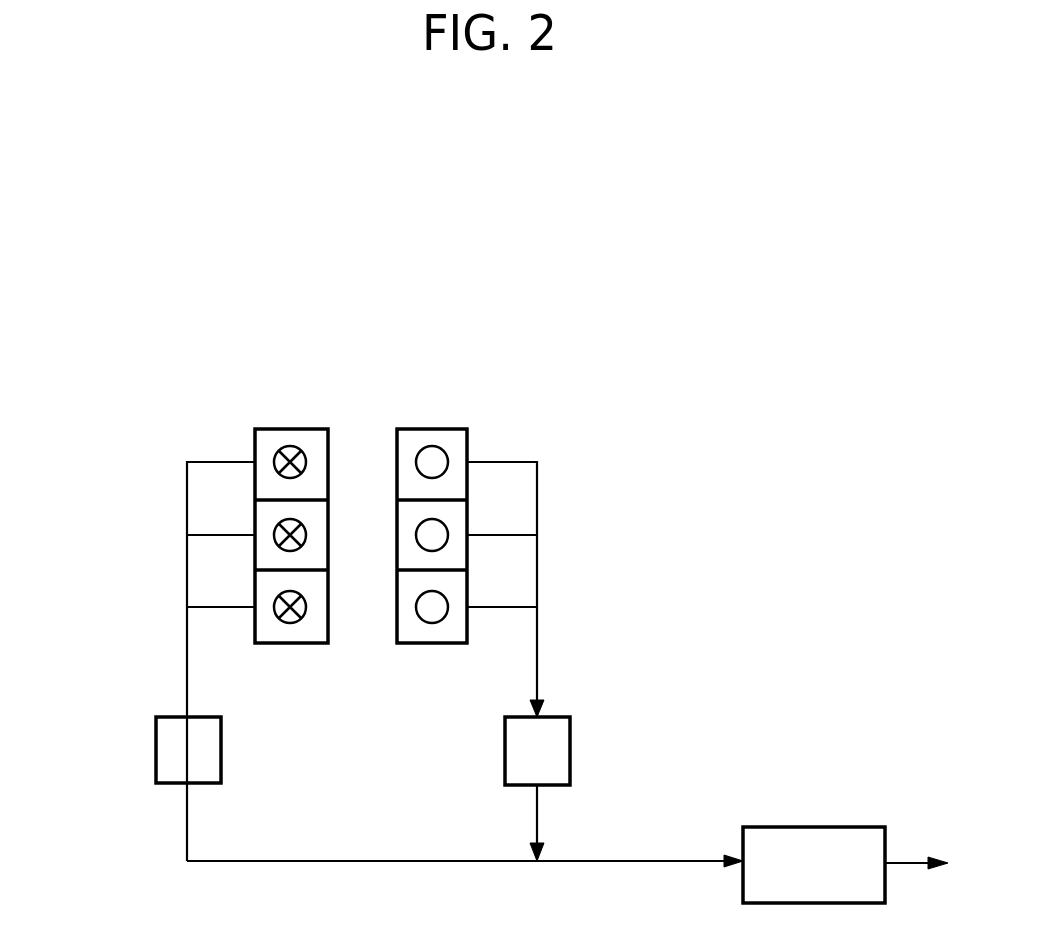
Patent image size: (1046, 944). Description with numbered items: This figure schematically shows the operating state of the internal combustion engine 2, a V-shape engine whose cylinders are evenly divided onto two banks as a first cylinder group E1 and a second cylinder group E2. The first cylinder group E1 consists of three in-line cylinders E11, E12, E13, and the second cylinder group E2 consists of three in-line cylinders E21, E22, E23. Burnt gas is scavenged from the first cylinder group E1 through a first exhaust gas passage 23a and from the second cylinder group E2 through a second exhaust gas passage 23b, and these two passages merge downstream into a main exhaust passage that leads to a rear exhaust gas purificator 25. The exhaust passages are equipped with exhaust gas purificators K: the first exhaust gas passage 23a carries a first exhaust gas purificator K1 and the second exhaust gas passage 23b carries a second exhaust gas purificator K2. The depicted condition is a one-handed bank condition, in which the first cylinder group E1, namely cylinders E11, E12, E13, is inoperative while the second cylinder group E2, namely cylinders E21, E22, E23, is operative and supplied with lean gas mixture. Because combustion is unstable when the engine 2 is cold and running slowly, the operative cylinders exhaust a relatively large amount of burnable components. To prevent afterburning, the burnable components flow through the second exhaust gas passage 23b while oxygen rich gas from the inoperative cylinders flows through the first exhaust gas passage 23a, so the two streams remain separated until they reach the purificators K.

The internal combustion engine 2 is at (510, 243).
The first cylinder group E1 is at (352, 300).
The second cylinder group E2 is at (620, 300).
The cylinder E11 is at (274, 456).
The cylinder E12 is at (304, 529).
The cylinder E13 is at (309, 608).
The cylinder E21 is at (412, 444).
The cylinder E22 is at (455, 525).
The cylinder E23 is at (452, 595).
The first exhaust gas passage 23a is at (186, 665).
The second exhaust gas passage 23b is at (537, 655).
The exhaust gas purificators K is at (463, 727).
The first exhaust gas purificator K1 is at (198, 745).
The second exhaust gas purificator K2 is at (528, 755).
The rear exhaust gas purificator 25 is at (810, 827).